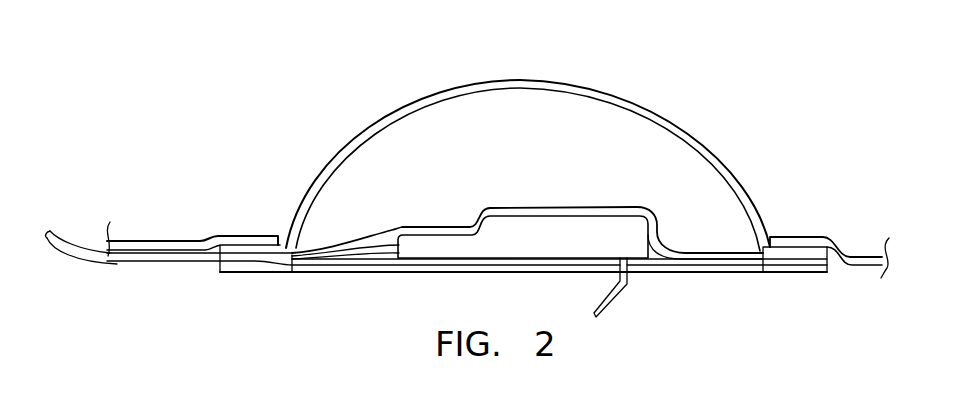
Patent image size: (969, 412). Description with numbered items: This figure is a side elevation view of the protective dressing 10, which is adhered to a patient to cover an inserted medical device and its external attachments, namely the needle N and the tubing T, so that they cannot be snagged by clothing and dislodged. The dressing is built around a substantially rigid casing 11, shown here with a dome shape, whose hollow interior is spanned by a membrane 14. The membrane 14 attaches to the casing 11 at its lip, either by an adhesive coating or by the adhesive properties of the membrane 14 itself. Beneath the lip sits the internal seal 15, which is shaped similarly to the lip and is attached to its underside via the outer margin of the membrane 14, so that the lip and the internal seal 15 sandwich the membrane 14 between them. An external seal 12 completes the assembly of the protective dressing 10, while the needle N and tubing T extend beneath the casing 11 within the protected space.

The protective dressing 10 is at (467, 189).
The casing 11 is at (376, 122).
The external seal 12 is at (804, 237).
The membrane 14 is at (358, 237).
The internal seal 15 is at (245, 270).
The needle N is at (598, 237).
The tubing T is at (78, 245).